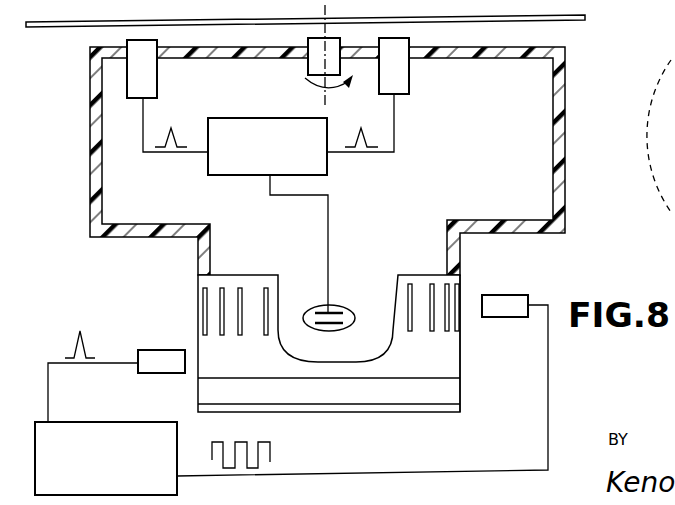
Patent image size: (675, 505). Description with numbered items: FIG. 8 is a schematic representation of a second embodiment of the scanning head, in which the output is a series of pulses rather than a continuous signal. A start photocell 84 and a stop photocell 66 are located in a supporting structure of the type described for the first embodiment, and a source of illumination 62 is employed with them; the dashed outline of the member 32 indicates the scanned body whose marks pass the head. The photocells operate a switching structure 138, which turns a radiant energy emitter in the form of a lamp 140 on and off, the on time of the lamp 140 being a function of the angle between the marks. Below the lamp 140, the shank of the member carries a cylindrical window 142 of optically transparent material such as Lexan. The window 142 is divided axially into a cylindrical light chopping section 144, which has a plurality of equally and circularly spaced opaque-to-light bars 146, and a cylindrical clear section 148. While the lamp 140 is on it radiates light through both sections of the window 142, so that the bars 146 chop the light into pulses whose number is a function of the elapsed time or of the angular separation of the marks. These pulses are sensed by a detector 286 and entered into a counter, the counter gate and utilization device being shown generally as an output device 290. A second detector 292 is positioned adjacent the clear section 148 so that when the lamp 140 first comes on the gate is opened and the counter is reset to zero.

The rotating drum 32 is at (674, 58).
The source of illumination 62 is at (308, 70).
The stop photocell 66 is at (409, 80).
The start photocell 84 is at (157, 83).
The switching structure 138 is at (328, 168).
The lamp 140 is at (330, 304).
The window 142 is at (192, 296).
The light chopping section 144 is at (462, 284).
The opaque-to-light bars 146 is at (265, 338).
The clear section 148 is at (462, 357).
The detector 286 is at (517, 295).
The output device 290 is at (117, 398).
The second detector 292 is at (173, 325).